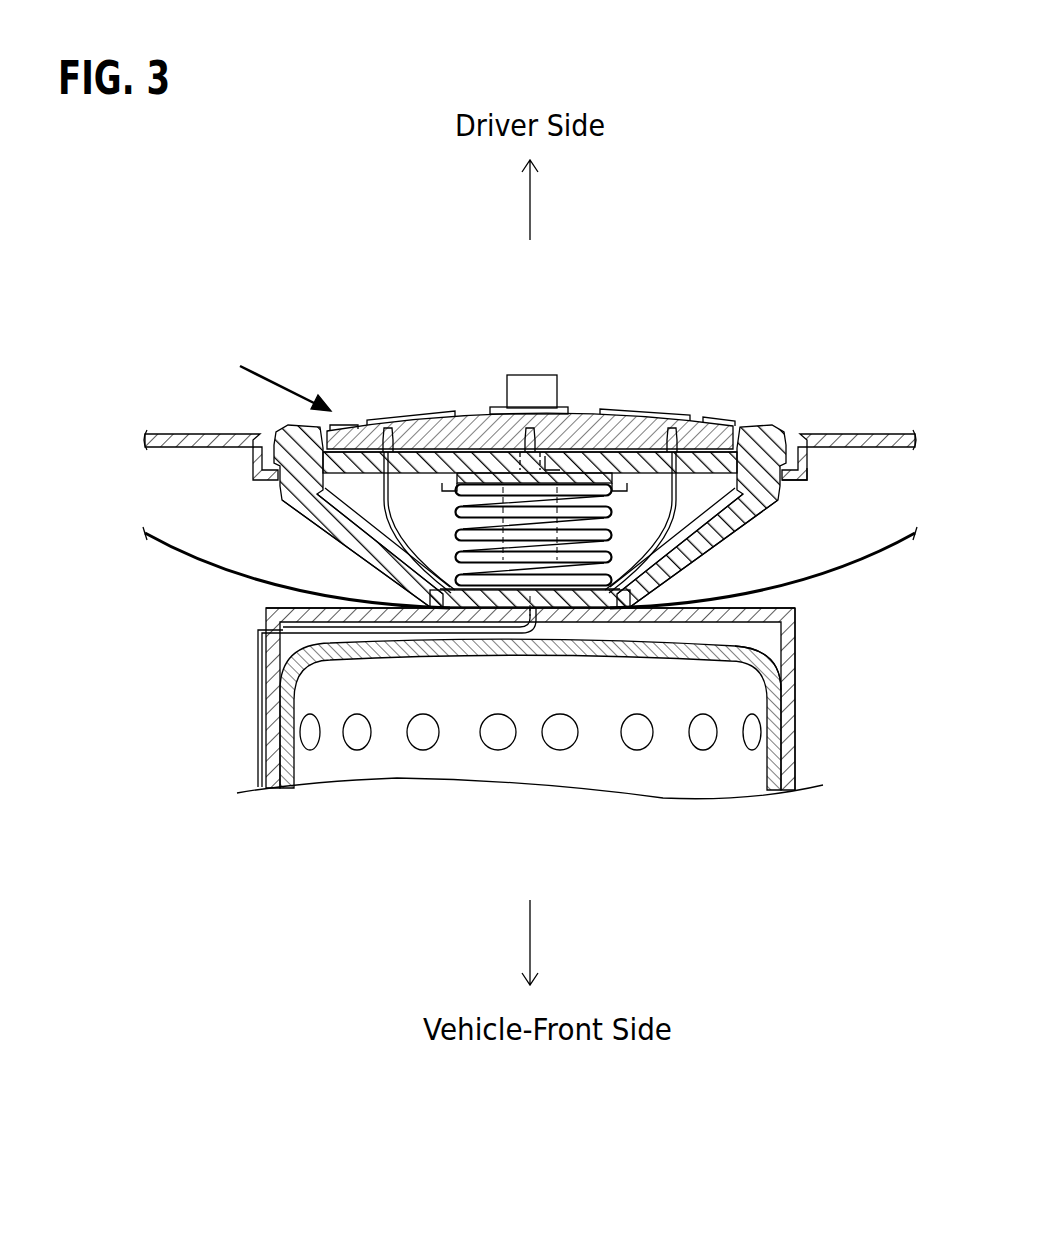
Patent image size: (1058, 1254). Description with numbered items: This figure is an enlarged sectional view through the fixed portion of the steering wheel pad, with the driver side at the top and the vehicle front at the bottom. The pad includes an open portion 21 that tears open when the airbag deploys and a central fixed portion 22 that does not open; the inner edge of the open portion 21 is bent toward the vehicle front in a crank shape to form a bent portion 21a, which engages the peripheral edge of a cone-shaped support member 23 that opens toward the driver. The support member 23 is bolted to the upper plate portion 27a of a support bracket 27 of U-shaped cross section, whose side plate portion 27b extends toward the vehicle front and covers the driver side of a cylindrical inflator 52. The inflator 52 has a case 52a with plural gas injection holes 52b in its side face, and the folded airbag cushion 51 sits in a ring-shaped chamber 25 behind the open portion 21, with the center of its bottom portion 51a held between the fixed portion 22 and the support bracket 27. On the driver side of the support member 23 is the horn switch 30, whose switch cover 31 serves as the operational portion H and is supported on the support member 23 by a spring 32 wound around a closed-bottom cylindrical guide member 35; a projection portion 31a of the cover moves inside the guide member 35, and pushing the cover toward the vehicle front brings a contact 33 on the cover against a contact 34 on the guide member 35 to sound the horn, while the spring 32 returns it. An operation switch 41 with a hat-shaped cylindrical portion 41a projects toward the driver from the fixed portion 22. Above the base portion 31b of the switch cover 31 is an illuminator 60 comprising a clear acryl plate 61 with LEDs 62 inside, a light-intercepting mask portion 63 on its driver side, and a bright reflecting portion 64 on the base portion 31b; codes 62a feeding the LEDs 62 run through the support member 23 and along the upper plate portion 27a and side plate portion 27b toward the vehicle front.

The operational portion H is at (265, 377).
The open portion 21 is at (853, 434).
The bent portion 21a is at (808, 476).
The fixed portion 22 is at (766, 368).
The support member 23 is at (746, 531).
The chamber 25 is at (222, 592).
The support bracket 27 is at (809, 766).
The upper plate portion 27a is at (762, 608).
The side plate portion 27b is at (797, 700).
The horn switch 30 is at (363, 378).
The switch cover 31 is at (346, 486).
The projection portion 31a is at (455, 503).
The base portion 31b is at (698, 475).
The spring 32 is at (602, 514).
The contact 33 is at (598, 470).
The contact 34 is at (592, 522).
The guide member 35 is at (457, 572).
The operation switch 41 is at (536, 364).
The cylindrical portion 41a is at (548, 380).
The airbag cushion 51 is at (205, 565).
The bottom portion 51a is at (334, 596).
The inflator 52 is at (575, 782).
The case 52a is at (776, 668).
The gas injection holes 52b is at (489, 749).
The illuminator 60 is at (421, 403).
The clear acryl plate 61 is at (655, 437).
The LEDs 62 is at (507, 400).
The codes 62a is at (258, 658).
The mask portion 63 is at (445, 420).
The reflecting portion 64 is at (580, 410).